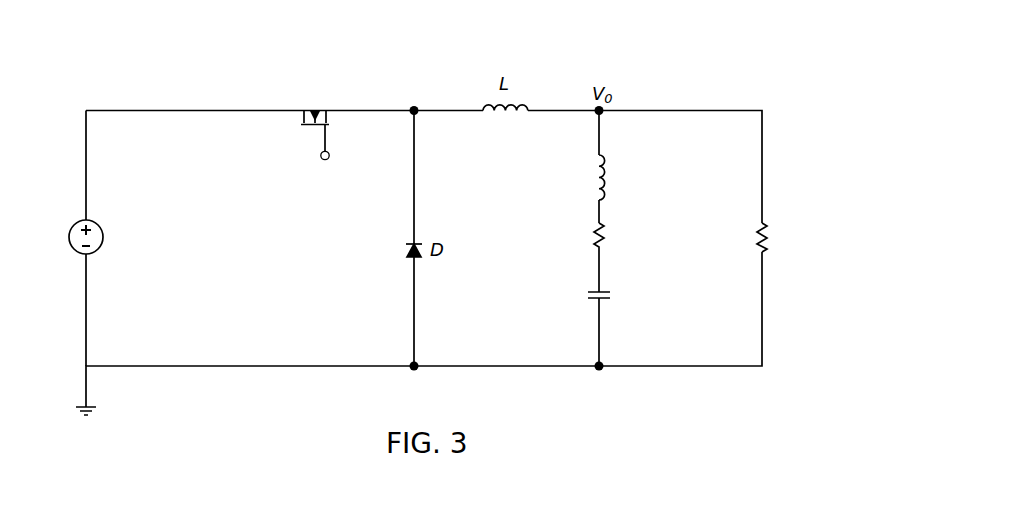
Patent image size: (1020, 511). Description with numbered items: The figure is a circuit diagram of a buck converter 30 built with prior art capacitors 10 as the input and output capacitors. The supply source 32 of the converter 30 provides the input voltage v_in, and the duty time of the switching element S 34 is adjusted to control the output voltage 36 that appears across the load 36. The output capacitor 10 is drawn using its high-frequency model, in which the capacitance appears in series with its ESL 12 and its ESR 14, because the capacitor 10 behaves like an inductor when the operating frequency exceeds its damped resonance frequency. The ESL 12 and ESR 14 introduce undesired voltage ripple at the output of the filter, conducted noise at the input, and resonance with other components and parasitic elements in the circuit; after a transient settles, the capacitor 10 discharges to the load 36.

The buck converter 30 is at (694, 88).
The supply source 32 is at (102, 228).
The switching element S 34 is at (320, 131).
The load 36 is at (776, 223).
The ESL 12 is at (598, 175).
The ESR 14 is at (598, 237).
The capacitor 10 is at (596, 299).